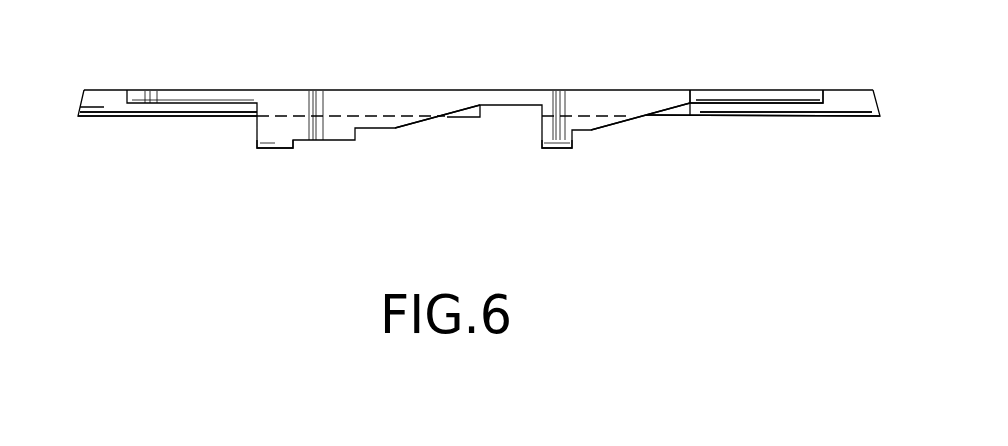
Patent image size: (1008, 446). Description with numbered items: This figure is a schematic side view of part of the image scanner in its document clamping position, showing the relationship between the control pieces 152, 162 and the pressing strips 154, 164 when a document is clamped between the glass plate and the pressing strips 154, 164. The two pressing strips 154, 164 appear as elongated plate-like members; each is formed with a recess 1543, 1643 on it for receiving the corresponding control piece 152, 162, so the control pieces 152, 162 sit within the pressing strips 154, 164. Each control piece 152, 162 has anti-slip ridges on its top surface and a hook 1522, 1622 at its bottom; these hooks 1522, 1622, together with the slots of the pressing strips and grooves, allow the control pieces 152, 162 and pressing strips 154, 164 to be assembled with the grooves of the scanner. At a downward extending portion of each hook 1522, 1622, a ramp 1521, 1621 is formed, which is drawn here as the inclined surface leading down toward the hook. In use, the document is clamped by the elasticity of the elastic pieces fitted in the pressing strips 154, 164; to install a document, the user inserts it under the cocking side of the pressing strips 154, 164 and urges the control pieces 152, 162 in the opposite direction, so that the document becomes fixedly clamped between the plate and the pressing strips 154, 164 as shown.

The control piece 152 is at (479, 88).
The control piece 162 is at (420, 90).
The pressing strip 154 is at (465, 181).
The pressing strip 164 is at (110, 112).
The ramp 1521 is at (540, 177).
The ramp 1621 is at (415, 123).
The hook 1522 is at (409, 195).
The hook 1622 is at (272, 146).
The recess 1543 is at (774, 62).
The recess 1643 is at (780, 100).